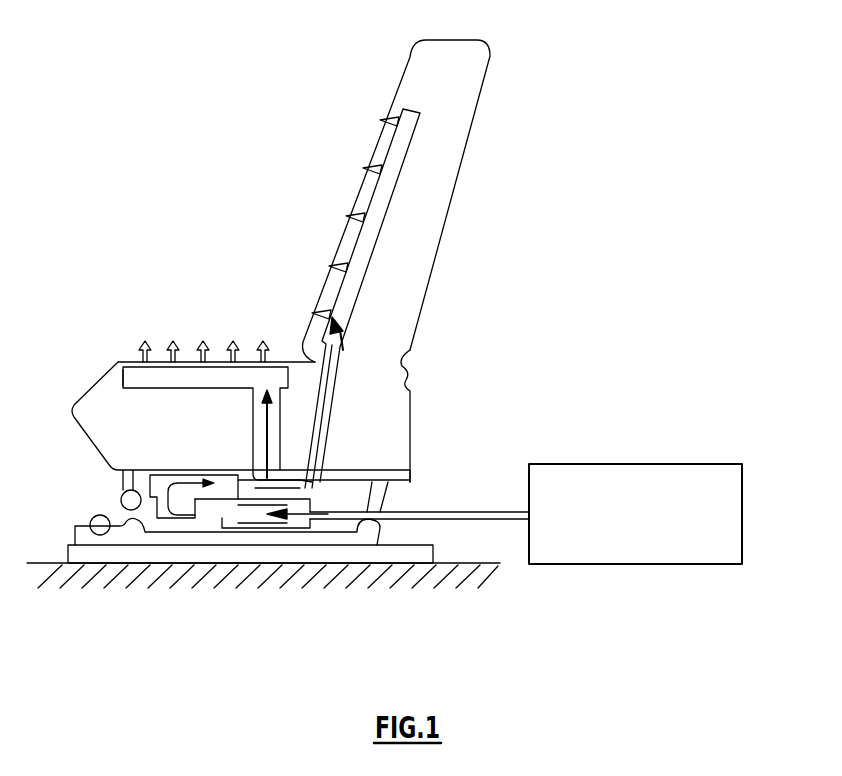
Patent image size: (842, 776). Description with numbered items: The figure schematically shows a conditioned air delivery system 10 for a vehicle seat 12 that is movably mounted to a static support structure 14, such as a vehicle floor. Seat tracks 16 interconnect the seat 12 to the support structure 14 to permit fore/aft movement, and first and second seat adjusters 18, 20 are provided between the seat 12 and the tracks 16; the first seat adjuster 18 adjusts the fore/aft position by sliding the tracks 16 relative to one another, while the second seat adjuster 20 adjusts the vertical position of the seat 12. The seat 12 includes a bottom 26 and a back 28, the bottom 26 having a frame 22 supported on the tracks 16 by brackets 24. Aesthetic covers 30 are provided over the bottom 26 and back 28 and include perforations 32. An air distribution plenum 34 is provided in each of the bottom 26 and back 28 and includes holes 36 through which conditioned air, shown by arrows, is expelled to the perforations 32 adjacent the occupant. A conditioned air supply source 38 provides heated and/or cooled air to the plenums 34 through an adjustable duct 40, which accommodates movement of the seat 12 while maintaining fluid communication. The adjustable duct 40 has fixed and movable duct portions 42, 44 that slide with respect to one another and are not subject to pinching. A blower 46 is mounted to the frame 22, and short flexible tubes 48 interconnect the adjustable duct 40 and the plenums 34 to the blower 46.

The conditioned air delivery system 10 is at (505, 410).
The vehicle seat 12 is at (420, 264).
The static support structure 14 is at (467, 563).
The seat tracks 16 is at (68, 552).
The first seat adjuster 18 is at (93, 516).
The second seat adjuster 20 is at (124, 493).
The frame 22 is at (403, 481).
The brackets 24 is at (392, 498).
The bottom 26 is at (398, 386).
The back 28 is at (427, 260).
The aesthetic covers 30 is at (118, 362).
The perforations 32 is at (133, 360).
The air distribution plenum 34 is at (195, 423).
The holes 36 is at (124, 380).
The conditioned air supply source 38 is at (623, 464).
The adjustable duct 40 is at (260, 546).
The fixed duct portion 42 is at (304, 530).
The movable duct portion 44 is at (217, 532).
The blower 46 is at (172, 478).
The flexible tubes 48 is at (298, 486).